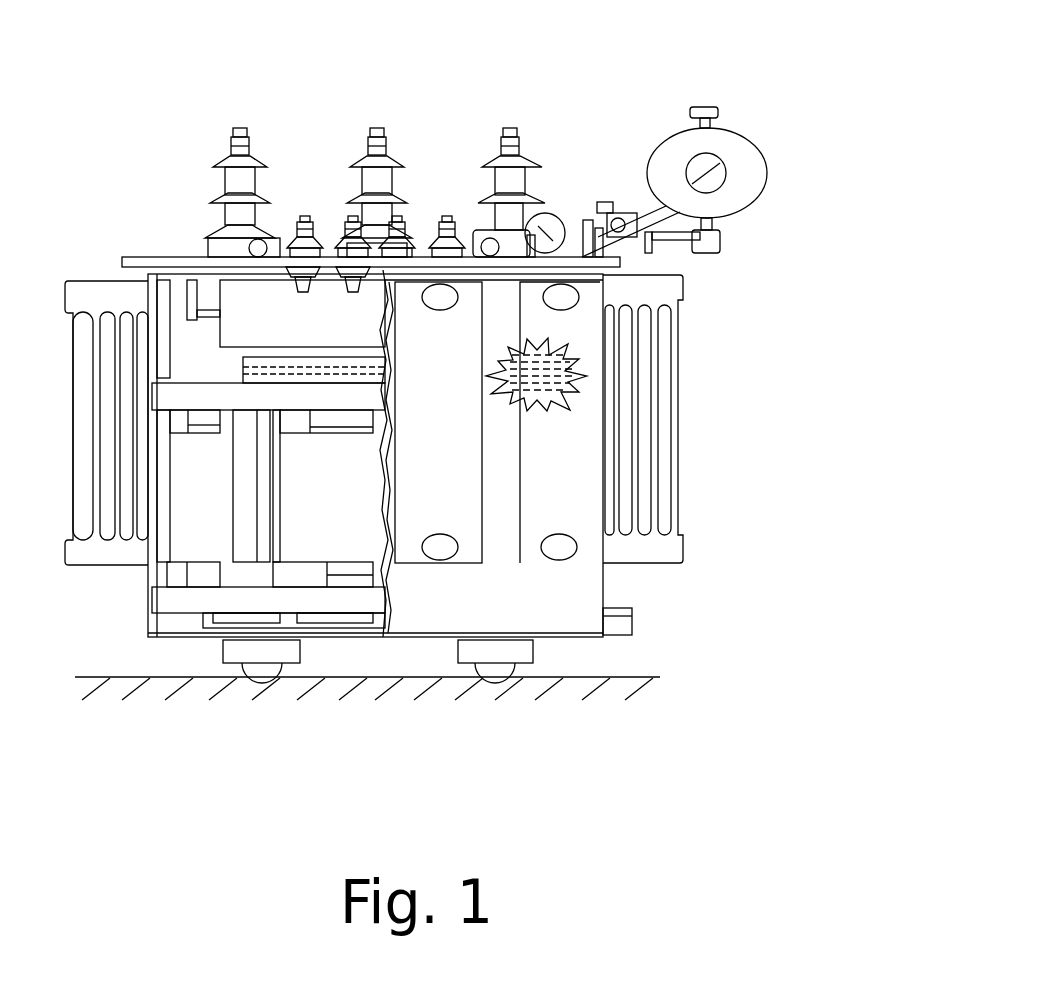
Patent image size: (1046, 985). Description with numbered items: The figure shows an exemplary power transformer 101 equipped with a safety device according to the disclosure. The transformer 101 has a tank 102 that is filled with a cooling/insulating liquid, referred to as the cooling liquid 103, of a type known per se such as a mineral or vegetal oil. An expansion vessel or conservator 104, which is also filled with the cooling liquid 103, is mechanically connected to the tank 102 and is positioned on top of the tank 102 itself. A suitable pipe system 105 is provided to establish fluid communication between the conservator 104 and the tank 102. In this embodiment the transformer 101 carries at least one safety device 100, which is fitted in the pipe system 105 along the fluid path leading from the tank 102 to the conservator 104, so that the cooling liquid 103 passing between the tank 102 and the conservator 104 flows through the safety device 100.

The safety device 100 is at (627, 203).
The power transformer 101 is at (448, 354).
The tank 102 is at (575, 447).
The cooling liquid 103 is at (575, 361).
The conservator 104 is at (736, 142).
The pipe system 105 is at (574, 214).